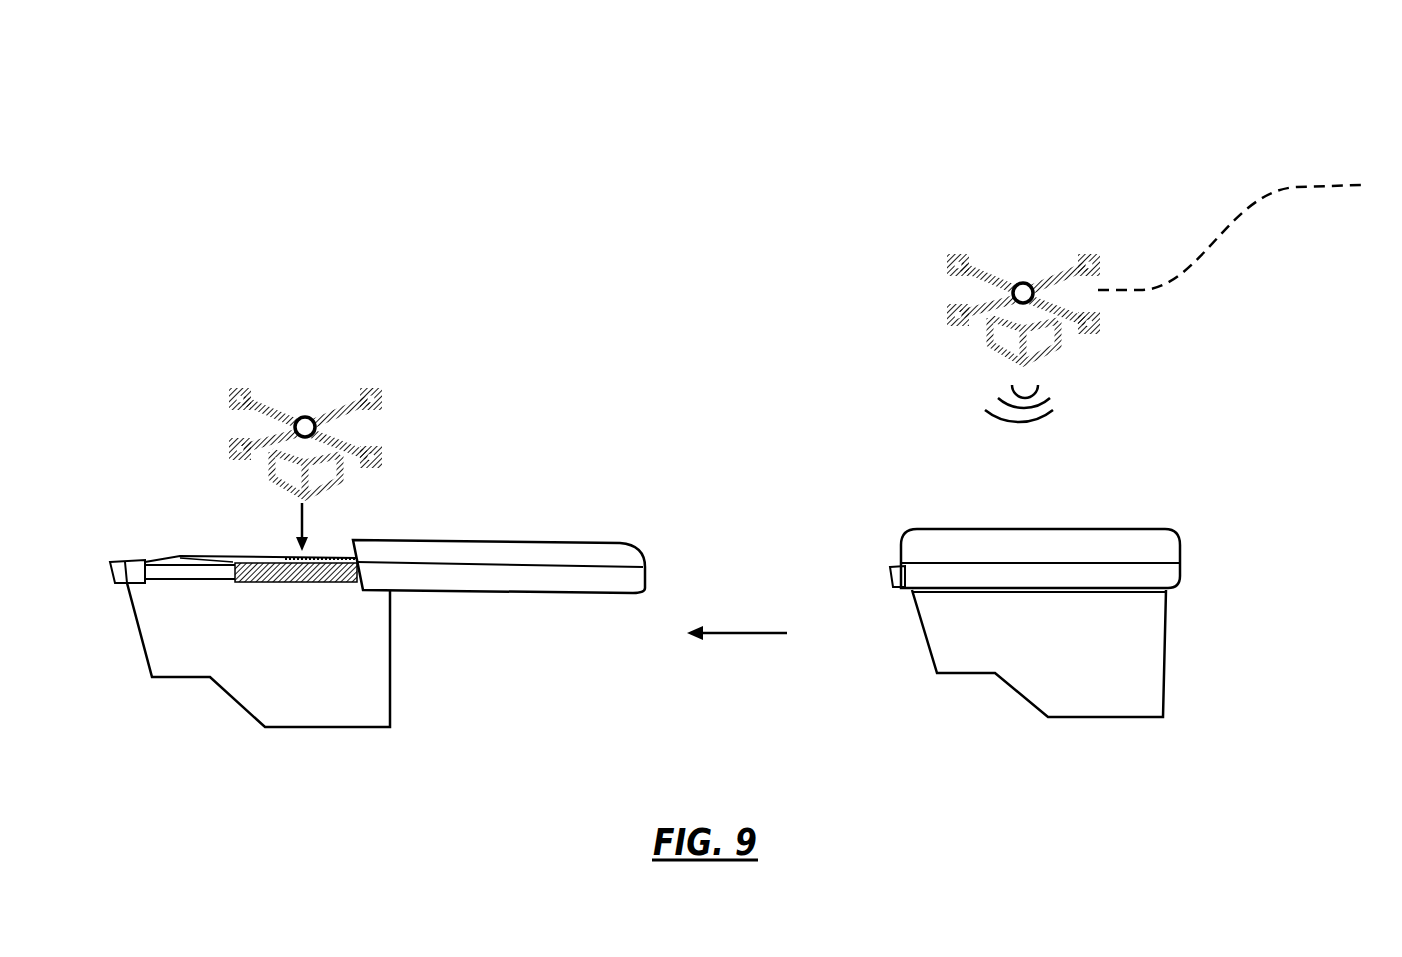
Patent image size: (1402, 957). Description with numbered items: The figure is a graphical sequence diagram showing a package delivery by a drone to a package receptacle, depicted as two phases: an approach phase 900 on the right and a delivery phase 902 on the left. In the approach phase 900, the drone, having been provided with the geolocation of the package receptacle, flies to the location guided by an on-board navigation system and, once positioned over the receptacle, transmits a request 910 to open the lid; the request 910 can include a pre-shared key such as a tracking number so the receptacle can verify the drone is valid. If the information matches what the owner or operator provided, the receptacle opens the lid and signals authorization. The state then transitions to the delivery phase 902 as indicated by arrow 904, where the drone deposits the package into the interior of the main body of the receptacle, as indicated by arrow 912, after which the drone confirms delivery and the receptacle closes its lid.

The approach phase 900 is at (1071, 82).
The delivery phase 902 is at (309, 150).
The arrow 904 is at (742, 633).
The request 910 is at (1048, 408).
The arrow 912 is at (302, 524).